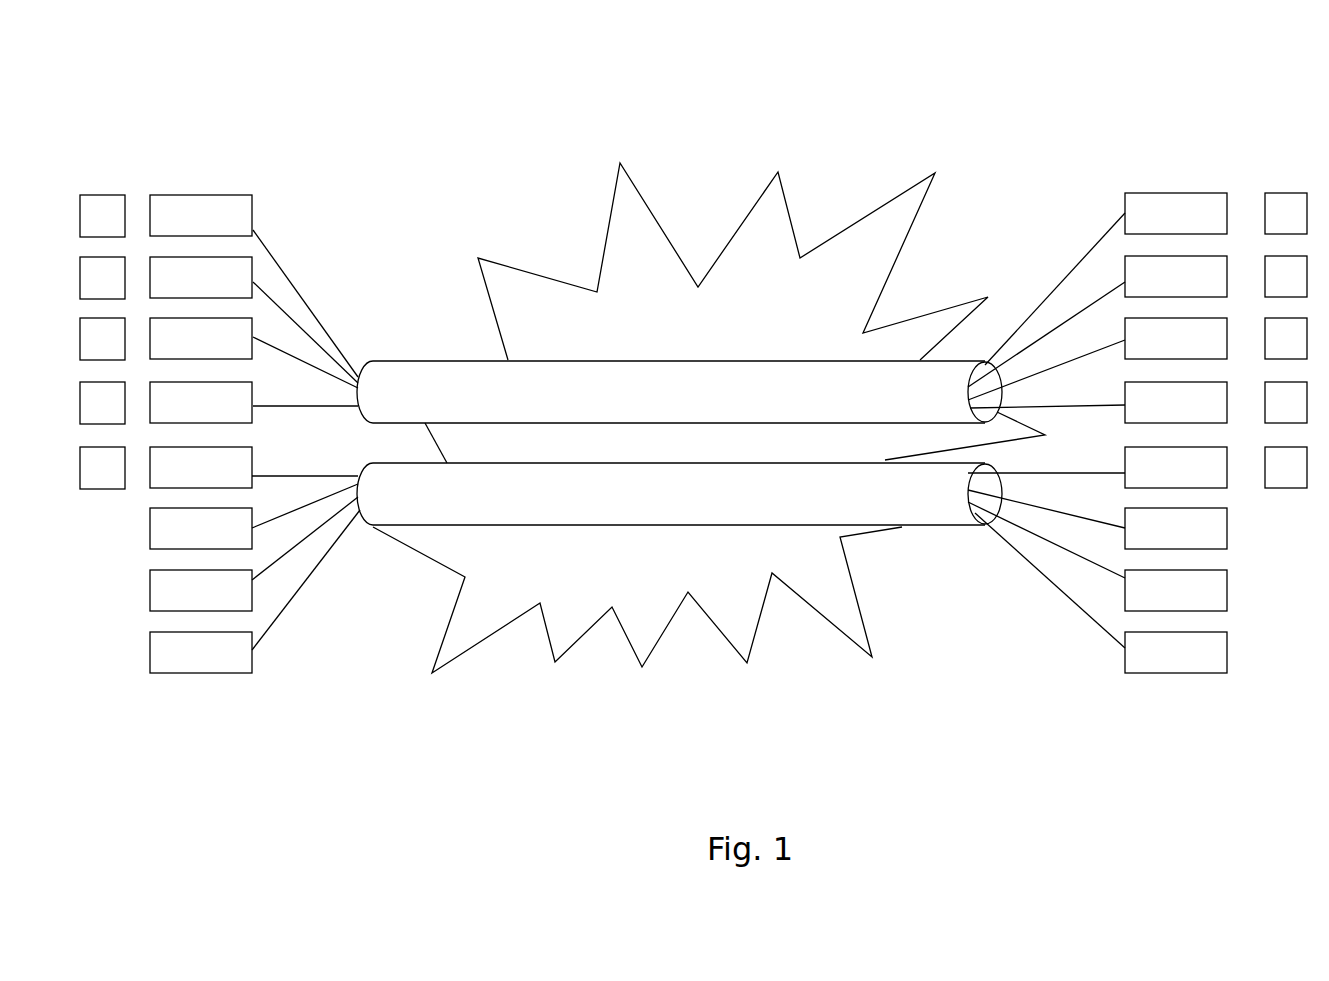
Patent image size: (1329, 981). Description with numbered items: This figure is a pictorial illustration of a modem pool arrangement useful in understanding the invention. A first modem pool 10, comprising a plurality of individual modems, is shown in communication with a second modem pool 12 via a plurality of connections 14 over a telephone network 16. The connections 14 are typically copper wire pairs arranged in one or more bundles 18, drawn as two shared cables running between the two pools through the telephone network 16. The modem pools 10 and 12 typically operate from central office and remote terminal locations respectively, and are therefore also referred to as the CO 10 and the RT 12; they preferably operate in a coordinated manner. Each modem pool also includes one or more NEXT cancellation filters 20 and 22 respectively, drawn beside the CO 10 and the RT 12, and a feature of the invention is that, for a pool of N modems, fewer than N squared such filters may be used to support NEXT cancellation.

The first modem pool 10 is at (190, 165).
The second modem pool 12 is at (1165, 163).
The connections 14 is at (290, 282).
The telephone network 16 is at (620, 217).
The bundles 18 is at (925, 512).
The NEXT cancellation filters 20 is at (102, 168).
The NEXT cancellation filters 22 is at (1270, 163).